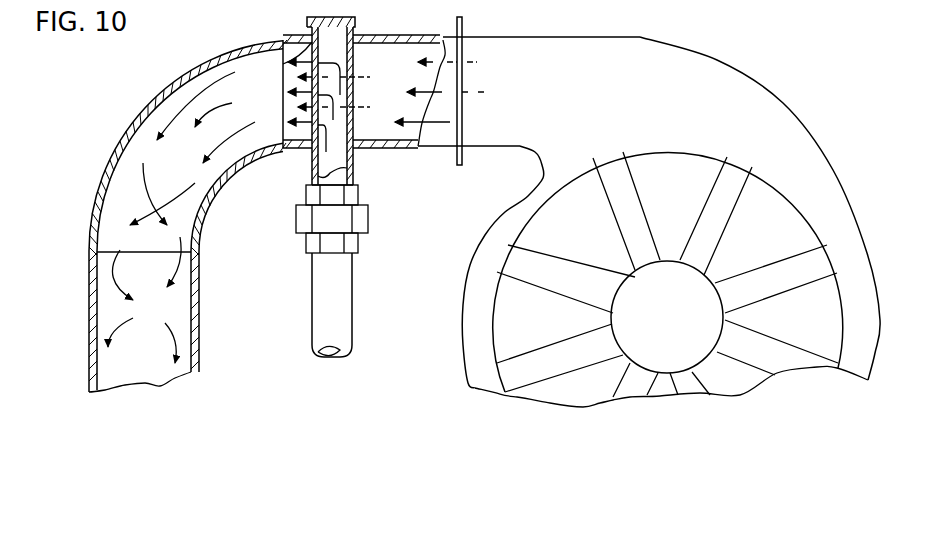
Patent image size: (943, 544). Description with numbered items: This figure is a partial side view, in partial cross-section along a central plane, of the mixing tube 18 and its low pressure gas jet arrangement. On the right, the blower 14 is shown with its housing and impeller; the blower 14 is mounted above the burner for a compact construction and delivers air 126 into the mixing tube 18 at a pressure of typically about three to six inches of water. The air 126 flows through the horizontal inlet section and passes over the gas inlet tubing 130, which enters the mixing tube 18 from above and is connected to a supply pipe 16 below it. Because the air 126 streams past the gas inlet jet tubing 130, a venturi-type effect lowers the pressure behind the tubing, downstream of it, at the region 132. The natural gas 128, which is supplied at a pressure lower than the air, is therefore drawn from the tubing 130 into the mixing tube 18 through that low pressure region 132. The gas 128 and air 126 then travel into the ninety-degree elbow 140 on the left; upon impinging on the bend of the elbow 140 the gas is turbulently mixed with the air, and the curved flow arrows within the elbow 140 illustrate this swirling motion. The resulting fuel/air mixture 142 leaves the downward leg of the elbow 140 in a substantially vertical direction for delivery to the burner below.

The blower 14 is at (797, 130).
The drain pipe 16 is at (347, 312).
The mixing tube 18 is at (190, 97).
The air 126 is at (433, 50).
The natural gas 128 is at (325, 142).
The gas inlet tubing 130 is at (316, 166).
The low pressure region 132 is at (313, 60).
The 90° elbow 140 is at (152, 108).
The fuel/air mixture 142 is at (120, 232).